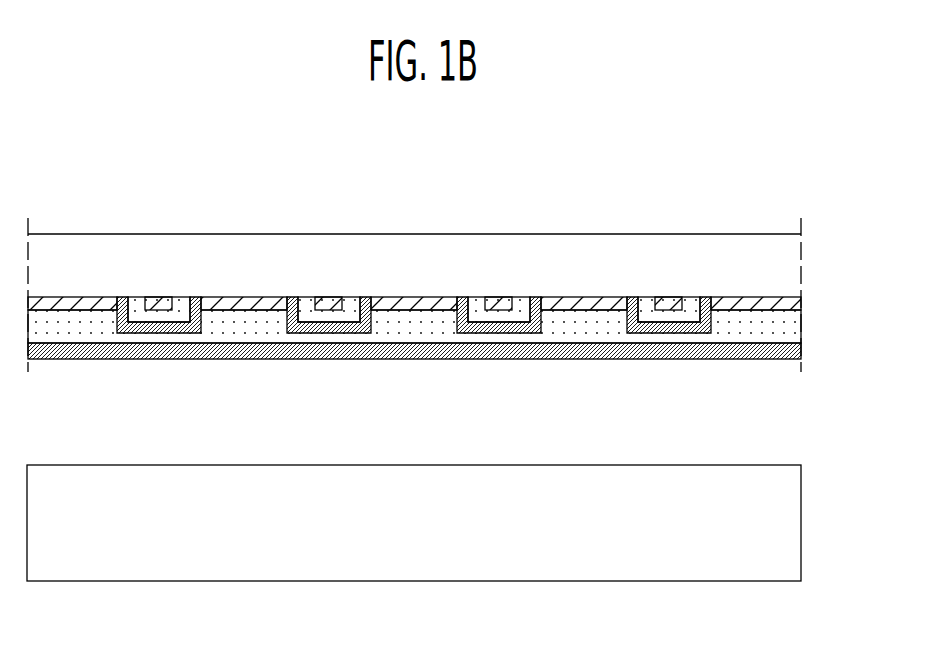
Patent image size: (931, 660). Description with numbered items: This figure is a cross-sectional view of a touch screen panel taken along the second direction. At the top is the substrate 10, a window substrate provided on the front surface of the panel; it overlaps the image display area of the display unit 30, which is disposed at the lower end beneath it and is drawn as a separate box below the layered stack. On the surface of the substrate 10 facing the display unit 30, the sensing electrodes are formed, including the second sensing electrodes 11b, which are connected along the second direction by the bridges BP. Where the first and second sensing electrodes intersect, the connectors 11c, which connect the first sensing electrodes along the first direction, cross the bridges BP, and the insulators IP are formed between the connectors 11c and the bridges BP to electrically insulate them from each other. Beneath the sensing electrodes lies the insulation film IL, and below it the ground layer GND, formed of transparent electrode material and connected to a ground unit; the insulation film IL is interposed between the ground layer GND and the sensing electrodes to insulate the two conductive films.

The substrate 10 is at (794, 258).
The second sensing electrode 11b is at (258, 302).
The connector 11c is at (162, 303).
The insulator IP is at (160, 316).
The bridge BP is at (192, 332).
The insulation film IL is at (267, 337).
The ground layer GND is at (347, 360).
The display unit 30 is at (794, 520).